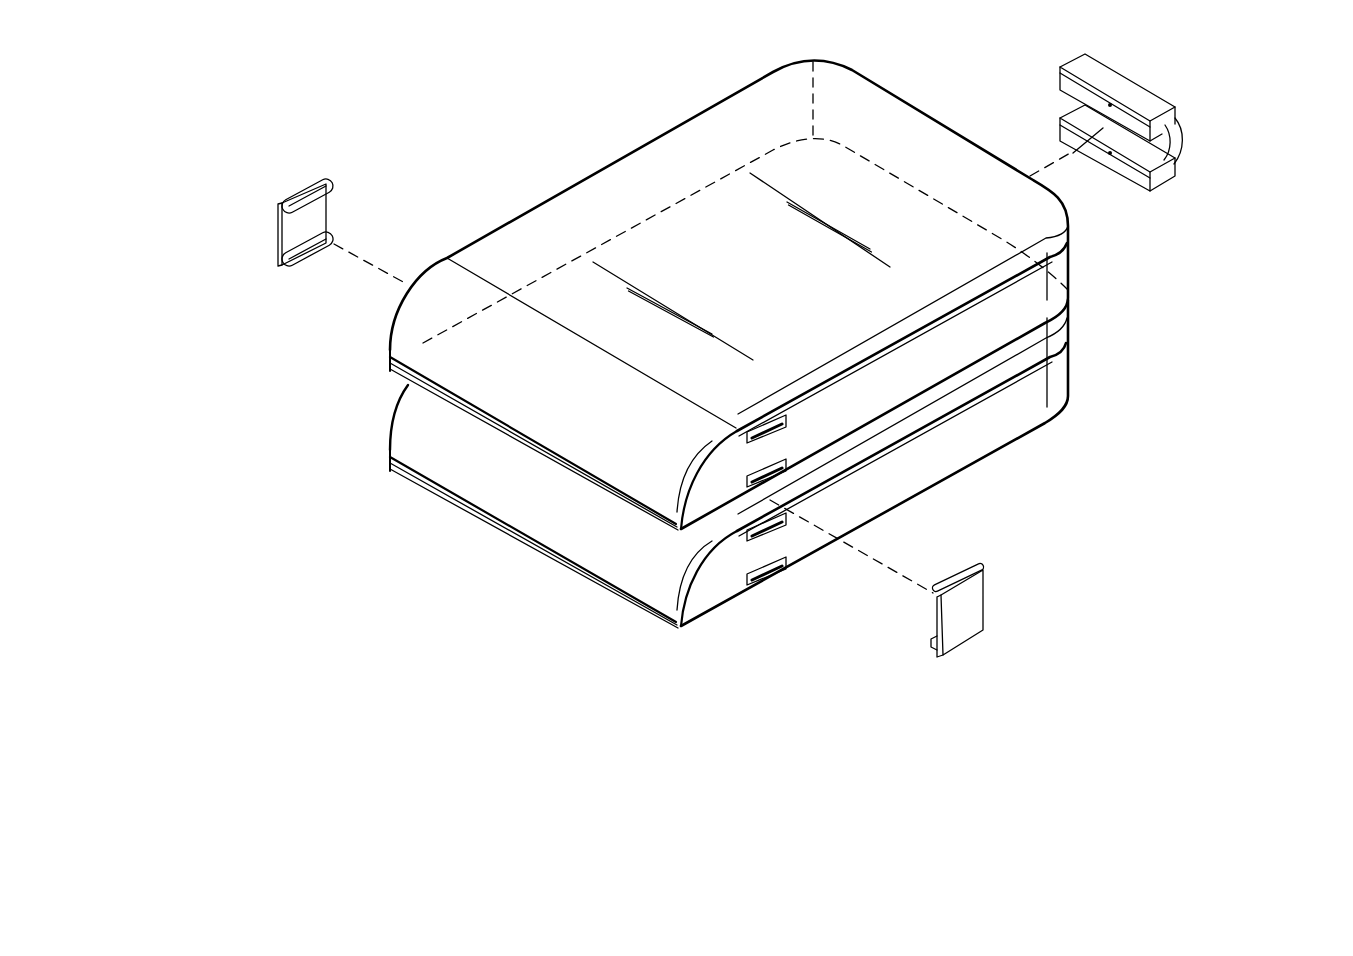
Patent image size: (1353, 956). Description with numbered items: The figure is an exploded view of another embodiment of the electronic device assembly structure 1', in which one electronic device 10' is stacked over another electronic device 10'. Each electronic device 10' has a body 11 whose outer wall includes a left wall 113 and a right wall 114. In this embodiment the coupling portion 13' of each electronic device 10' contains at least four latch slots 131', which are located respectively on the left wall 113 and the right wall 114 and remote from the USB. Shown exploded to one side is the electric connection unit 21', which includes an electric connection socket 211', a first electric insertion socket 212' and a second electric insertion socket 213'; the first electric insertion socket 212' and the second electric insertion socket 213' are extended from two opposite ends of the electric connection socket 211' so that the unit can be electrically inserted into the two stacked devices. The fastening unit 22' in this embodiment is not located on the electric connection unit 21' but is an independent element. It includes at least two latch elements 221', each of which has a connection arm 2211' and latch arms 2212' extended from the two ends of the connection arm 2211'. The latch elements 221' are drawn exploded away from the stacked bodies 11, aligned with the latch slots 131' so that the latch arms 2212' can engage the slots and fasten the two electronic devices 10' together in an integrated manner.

The electronic device assembly structure 1' is at (751, 370).
The electronic device 10' is at (674, 344).
The body 11 is at (989, 452).
The left wall 113 is at (1007, 310).
The right wall 114 is at (650, 193).
The latch slot 131' is at (884, 530).
The coupling portion 13' is at (884, 530).
The electric connection unit 21' is at (1168, 133).
The electric connection socket 211' is at (1208, 145).
The first electric insertion socket 212' is at (1156, 97).
The second electric insertion socket 213' is at (1156, 159).
The fastening unit 22' is at (678, 378).
The latch element 221' is at (678, 378).
The connection arm 2211' is at (260, 226).
The latch arm 2212' is at (264, 252).